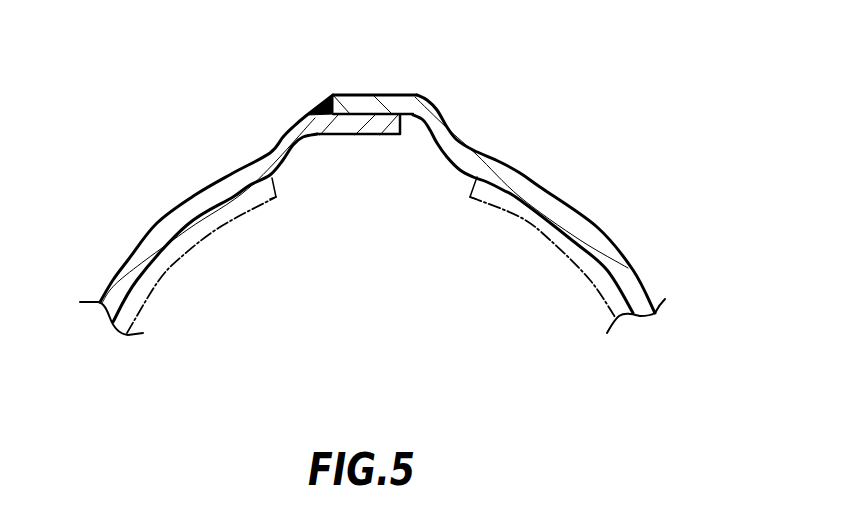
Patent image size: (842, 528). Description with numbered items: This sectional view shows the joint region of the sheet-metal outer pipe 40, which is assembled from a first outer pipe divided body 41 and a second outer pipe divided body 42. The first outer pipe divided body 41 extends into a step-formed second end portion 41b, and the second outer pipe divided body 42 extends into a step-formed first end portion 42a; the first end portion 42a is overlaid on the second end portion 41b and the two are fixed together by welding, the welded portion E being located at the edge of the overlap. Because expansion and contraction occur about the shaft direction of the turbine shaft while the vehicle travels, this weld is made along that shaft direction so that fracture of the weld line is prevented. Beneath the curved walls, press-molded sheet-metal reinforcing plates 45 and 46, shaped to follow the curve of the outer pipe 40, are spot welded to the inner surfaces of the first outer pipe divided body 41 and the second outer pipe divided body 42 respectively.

The outer pipe 40 is at (399, 180).
The first outer pipe divided body 41 is at (240, 215).
The second outer pipe divided body 42 is at (525, 179).
The second end portion 41b is at (362, 133).
The first end portion 42a is at (358, 101).
The welded portion E is at (323, 101).
The reinforcing plate 45 is at (181, 260).
The reinforcing plate 46 is at (566, 260).